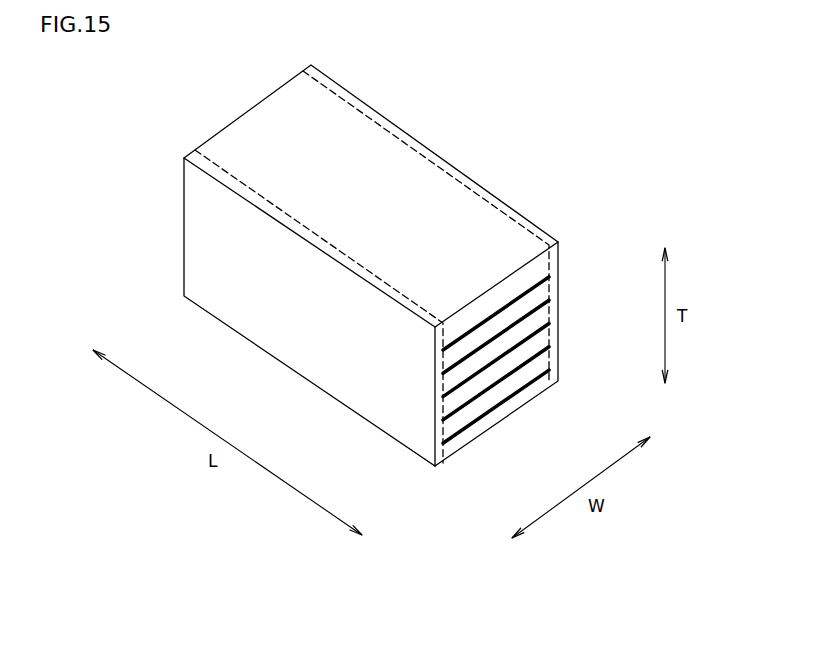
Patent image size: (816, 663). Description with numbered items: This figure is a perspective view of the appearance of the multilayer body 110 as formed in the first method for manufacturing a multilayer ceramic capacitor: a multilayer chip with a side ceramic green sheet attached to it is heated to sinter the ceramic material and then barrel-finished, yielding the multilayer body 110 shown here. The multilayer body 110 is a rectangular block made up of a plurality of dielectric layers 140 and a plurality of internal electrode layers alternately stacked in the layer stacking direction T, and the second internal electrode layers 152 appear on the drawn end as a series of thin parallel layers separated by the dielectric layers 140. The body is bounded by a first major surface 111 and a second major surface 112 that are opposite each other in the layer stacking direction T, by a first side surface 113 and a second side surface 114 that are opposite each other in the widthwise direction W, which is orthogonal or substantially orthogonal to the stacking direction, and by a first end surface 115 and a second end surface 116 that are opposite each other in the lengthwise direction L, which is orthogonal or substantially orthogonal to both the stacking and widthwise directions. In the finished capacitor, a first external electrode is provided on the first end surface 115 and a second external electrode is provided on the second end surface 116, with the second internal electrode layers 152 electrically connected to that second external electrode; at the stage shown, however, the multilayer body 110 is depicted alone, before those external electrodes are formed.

The multilayer body 110 is at (594, 128).
The first major surface 111 is at (352, 147).
The second major surface 112 is at (375, 383).
The first side surface 113 is at (245, 293).
The second side surface 114 is at (465, 225).
The first end surface 115 is at (273, 141).
The second end surface 116 is at (520, 330).
The dielectric layer 140 is at (520, 375).
The second internal electrode layer 152 is at (478, 397).